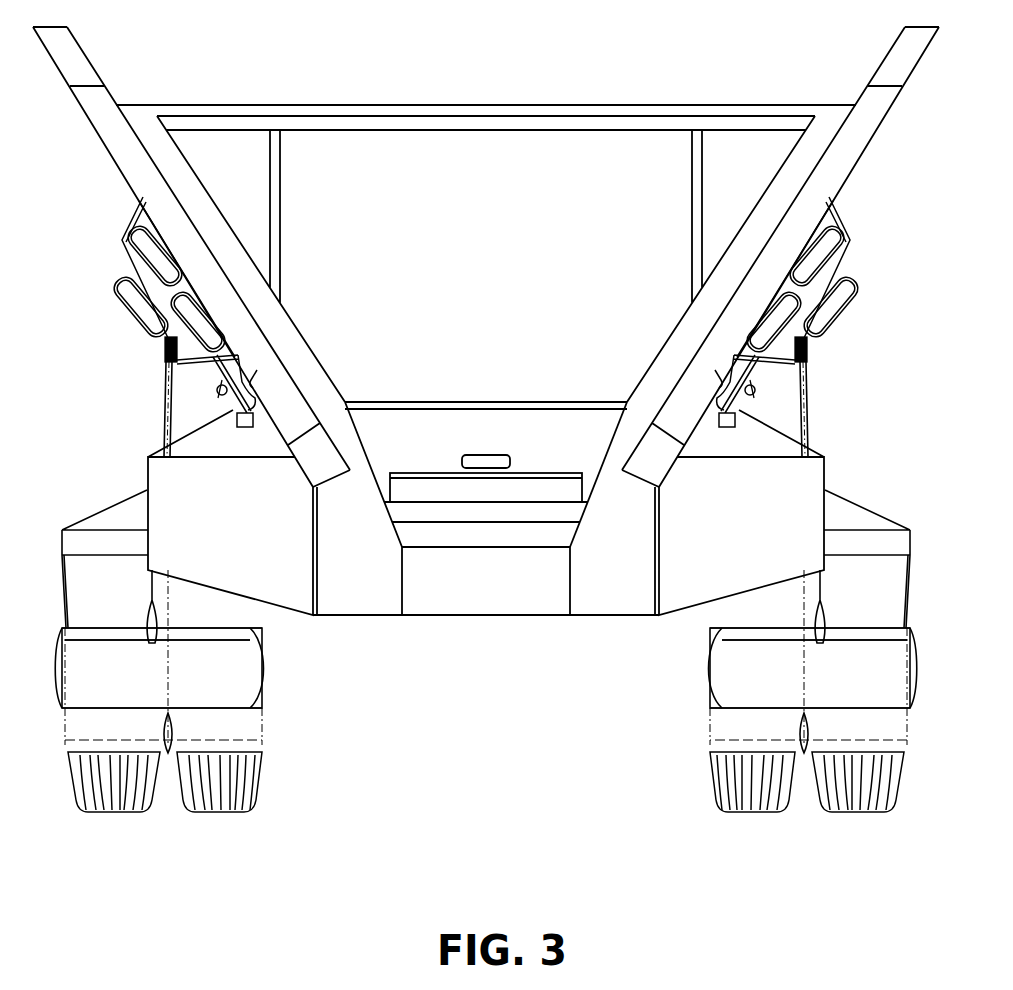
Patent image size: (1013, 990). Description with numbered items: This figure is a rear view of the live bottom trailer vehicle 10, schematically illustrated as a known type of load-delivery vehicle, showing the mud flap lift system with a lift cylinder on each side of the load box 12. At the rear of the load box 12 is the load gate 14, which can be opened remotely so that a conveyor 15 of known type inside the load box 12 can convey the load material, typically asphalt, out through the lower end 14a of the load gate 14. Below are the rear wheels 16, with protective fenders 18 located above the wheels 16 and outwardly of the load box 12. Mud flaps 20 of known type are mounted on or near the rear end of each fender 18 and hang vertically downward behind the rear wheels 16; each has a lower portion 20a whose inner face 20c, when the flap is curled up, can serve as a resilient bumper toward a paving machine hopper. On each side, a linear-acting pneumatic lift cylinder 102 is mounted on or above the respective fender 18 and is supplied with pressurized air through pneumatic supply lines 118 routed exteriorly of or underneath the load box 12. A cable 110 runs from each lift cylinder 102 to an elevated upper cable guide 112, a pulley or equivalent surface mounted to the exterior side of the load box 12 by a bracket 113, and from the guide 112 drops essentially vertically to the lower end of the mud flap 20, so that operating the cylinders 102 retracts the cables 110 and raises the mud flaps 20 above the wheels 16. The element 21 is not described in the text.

The live bottom trailer vehicle 10 is at (80, 160).
The load box 12 is at (812, 151).
The load gate 14 is at (622, 145).
The lower end of load gate 14a is at (537, 418).
The conveyor 15 is at (430, 490).
The rear wheels 16 is at (80, 792).
The fenders 18 is at (785, 442).
The mud flaps 20 is at (100, 613).
The lower portions of mud flaps 20a is at (240, 633).
The axle 21 is at (486, 662).
The inner faces of mud flaps 20c is at (247, 680).
The pneumatic lift cylinder 102 is at (233, 410).
The cable 110 is at (147, 513).
The upper cable guide 112 is at (163, 353).
The bracket 113 is at (121, 224).
The pneumatic supply lines 118 is at (258, 392).